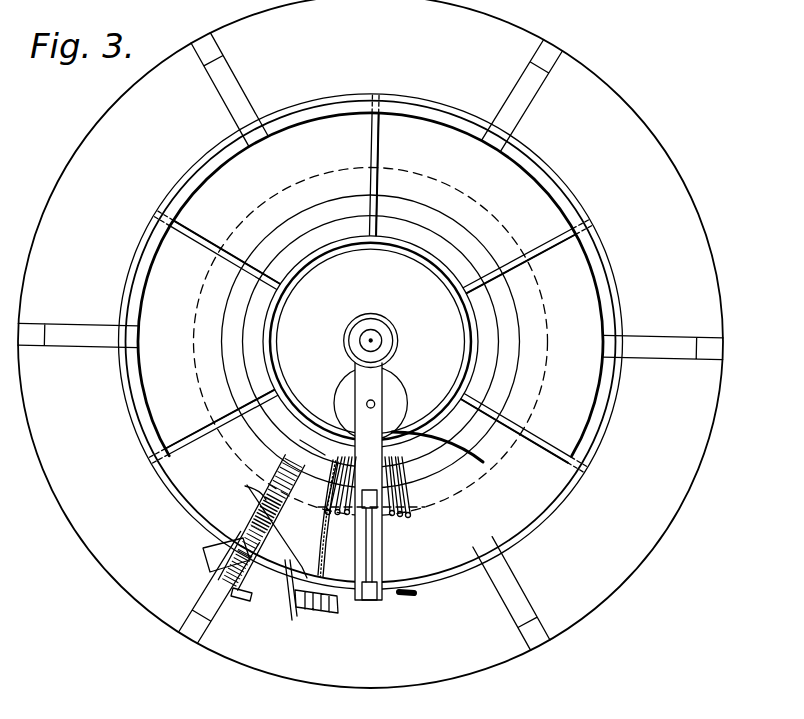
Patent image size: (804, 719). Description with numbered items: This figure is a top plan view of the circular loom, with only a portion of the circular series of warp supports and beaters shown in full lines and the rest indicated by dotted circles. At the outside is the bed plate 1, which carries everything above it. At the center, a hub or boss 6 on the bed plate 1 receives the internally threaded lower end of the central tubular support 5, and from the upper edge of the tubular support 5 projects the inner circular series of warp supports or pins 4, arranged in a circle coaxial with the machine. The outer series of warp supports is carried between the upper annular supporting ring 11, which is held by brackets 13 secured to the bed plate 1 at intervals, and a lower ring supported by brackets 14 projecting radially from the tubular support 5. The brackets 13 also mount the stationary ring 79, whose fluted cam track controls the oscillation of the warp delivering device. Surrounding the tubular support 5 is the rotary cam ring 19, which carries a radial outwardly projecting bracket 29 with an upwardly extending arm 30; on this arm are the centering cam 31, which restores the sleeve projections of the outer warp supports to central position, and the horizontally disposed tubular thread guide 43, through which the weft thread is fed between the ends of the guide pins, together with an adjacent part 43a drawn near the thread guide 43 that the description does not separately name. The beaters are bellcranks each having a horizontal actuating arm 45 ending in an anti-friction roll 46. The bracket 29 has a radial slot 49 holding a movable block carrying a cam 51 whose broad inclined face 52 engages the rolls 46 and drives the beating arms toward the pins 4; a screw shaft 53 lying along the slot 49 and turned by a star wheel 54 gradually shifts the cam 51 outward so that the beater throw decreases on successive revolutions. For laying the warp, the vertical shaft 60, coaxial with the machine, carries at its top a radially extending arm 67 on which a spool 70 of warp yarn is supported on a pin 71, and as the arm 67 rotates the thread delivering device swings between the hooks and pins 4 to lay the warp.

The bed plate 1 is at (655, 495).
The warp supports or pins 4 is at (400, 428).
The tubular support 5 is at (435, 260).
The hub or boss 6 is at (282, 305).
The upper annular supporting ring 11 is at (437, 567).
The brackets 13 is at (230, 87).
The brackets 14 is at (373, 147).
The cam ring 19 is at (453, 443).
The bracket 29 is at (286, 509).
The arm 30 is at (320, 613).
The centering cam 31 is at (405, 593).
The tubular thread guide 43 is at (318, 541).
The lever 43a is at (287, 617).
The actuating arm 45 is at (402, 474).
The anti-friction roll 46 is at (403, 517).
The radial slot 49 is at (262, 513).
The cam 51 is at (255, 492).
The inclined cam face 52 is at (277, 463).
The screw shaft 53 is at (258, 527).
The star wheel 54 is at (233, 595).
The vertically disposed shaft 60 is at (372, 339).
The arm 67 is at (363, 367).
The spool 70 is at (345, 397).
The pin 71 is at (375, 402).
The stationary ring 79 is at (127, 403).